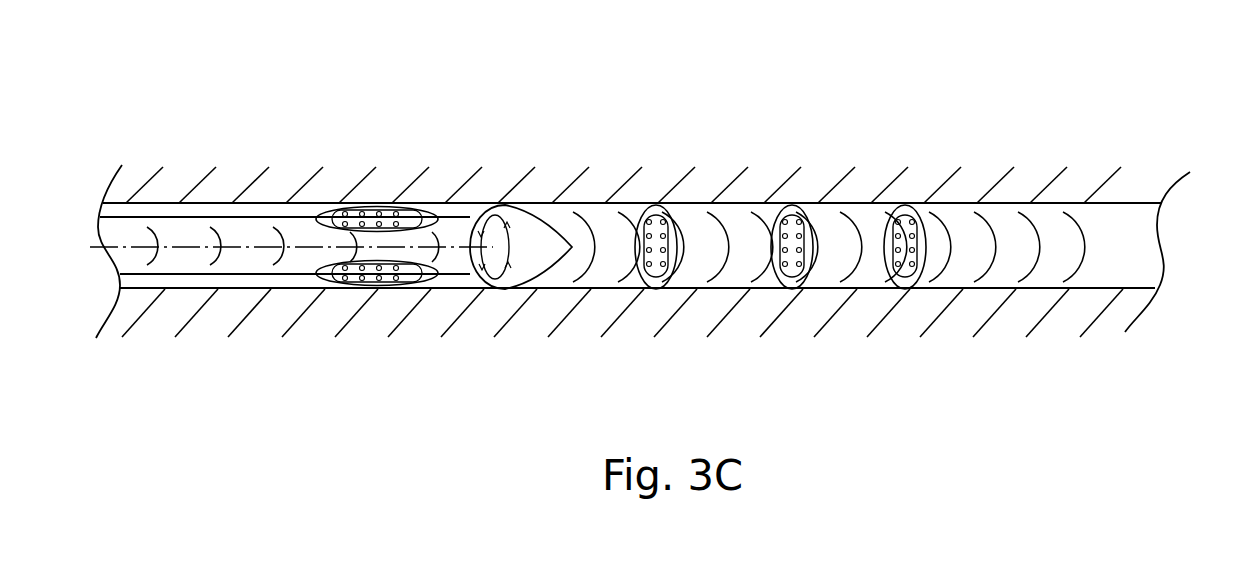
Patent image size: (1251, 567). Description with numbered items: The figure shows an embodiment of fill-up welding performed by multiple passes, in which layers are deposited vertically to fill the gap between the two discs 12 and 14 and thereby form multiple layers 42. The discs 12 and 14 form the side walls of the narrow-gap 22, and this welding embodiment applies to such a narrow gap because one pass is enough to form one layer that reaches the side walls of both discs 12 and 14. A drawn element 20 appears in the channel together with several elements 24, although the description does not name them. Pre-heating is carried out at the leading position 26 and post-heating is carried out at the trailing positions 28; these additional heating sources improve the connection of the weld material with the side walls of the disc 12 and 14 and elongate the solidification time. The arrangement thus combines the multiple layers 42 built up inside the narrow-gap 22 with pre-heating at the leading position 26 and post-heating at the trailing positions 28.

The disc 12 is at (610, 191).
The disc 14 is at (621, 305).
The droplet / fluid slug 20 is at (537, 260).
The narrow-gap 22 is at (1135, 233).
The coil element 24 is at (493, 204).
The leading position 26 is at (322, 204).
The trailing positions 28 is at (668, 291).
The multiple layers 42 is at (1021, 135).